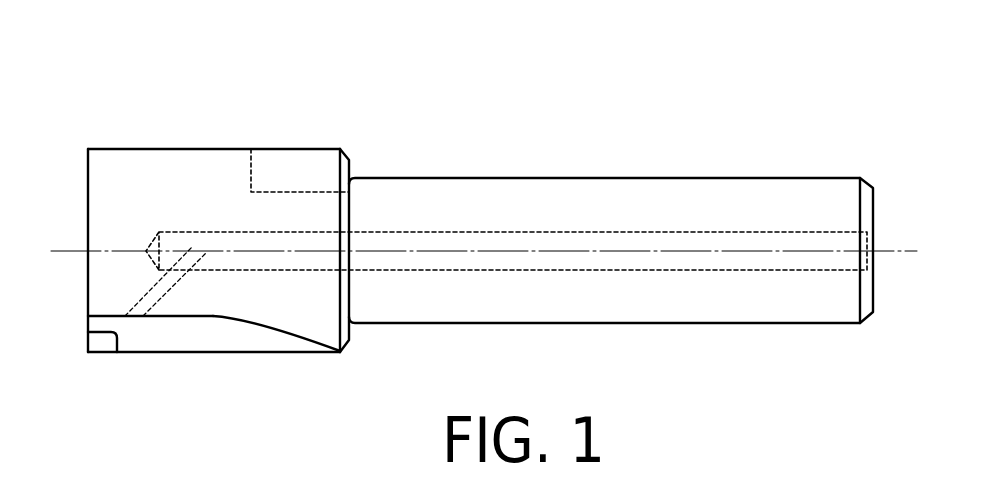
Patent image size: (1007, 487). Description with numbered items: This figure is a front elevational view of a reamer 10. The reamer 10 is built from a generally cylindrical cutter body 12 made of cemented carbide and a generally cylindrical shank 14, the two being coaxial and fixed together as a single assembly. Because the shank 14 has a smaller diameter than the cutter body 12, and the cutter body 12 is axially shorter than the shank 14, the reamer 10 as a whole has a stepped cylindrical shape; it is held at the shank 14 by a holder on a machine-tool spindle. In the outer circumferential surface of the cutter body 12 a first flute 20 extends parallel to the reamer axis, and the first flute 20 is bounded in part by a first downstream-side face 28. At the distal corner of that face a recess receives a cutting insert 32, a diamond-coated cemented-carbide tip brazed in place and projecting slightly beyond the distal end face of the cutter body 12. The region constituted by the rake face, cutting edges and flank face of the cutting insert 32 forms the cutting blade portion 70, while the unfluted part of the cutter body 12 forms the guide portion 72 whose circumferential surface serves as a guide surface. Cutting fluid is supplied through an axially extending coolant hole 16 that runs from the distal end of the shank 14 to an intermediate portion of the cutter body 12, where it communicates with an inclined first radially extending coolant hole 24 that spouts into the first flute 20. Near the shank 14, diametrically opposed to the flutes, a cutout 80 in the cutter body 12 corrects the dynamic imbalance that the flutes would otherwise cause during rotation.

The reamer 10 is at (432, 98).
The cutter body 12 is at (218, 118).
The shank 14 is at (598, 188).
The axially extending coolant hole 16 is at (735, 233).
The first flute 20 is at (182, 362).
The first radially extending coolant hole 24 is at (168, 277).
The first downstream-side face 28 is at (143, 337).
The cutting insert 32 is at (90, 345).
The cutting blade portion 70 is at (112, 363).
The guide portion 72 is at (123, 137).
The cutout 80 is at (277, 192).